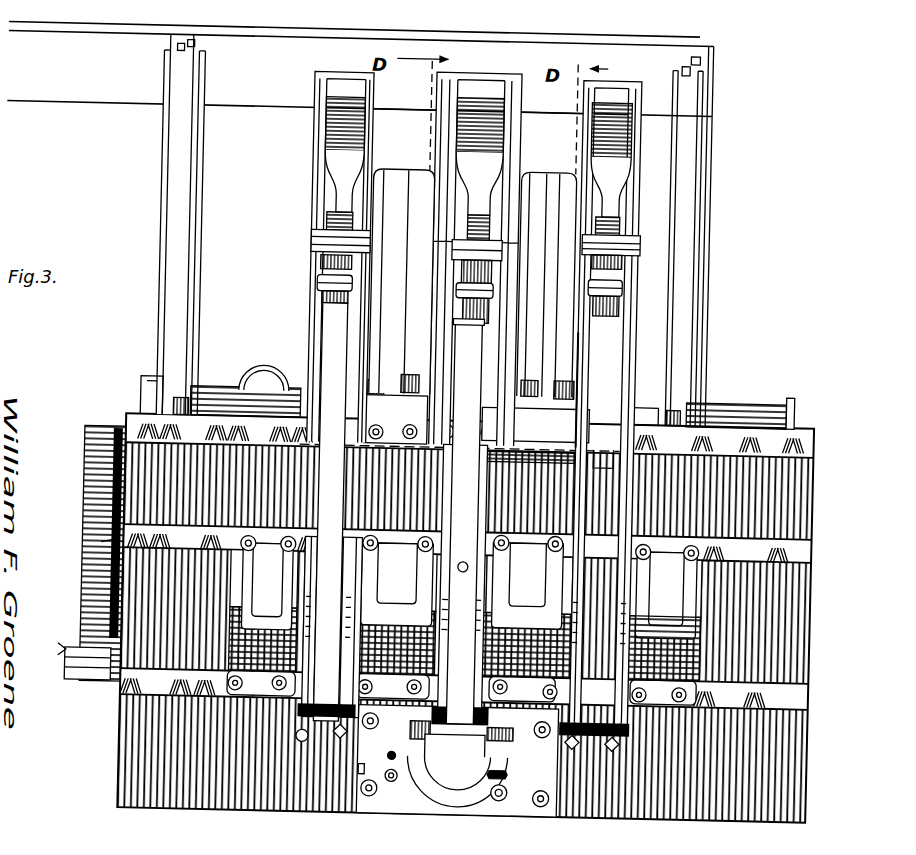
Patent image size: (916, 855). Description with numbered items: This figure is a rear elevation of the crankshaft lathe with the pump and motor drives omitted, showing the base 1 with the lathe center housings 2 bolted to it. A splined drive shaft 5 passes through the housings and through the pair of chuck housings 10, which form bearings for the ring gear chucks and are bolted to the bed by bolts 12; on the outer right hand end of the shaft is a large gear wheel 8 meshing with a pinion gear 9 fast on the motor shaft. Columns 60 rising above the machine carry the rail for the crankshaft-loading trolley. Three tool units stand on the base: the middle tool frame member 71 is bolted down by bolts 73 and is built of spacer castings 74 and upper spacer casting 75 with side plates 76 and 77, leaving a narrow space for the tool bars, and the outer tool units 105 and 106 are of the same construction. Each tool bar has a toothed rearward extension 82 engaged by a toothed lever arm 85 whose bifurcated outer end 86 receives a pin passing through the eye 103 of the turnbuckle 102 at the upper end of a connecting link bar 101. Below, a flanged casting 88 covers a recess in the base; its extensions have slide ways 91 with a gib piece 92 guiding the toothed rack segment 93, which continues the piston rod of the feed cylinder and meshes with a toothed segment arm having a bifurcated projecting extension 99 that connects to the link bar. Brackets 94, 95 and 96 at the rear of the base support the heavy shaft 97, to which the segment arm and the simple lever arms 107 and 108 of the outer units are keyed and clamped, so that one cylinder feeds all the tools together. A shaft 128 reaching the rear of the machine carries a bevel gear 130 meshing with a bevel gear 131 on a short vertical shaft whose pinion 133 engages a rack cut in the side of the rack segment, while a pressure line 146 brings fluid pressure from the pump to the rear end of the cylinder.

The base 1 is at (810, 636).
The lathe center housings 2 is at (209, 401).
The drive shaft 5 is at (104, 550).
The large gear wheel 8 is at (84, 466).
The pinion gear 9 is at (72, 662).
The chuck housings 10 is at (391, 185).
The bolts 12 is at (413, 378).
The columns 60 is at (156, 192).
The tool frame member 71 is at (489, 321).
The bolts 73 is at (543, 438).
The spacer casting 74 is at (495, 340).
The upper spacer casting 75 is at (483, 92).
The side plate 76 is at (306, 152).
The side plate 77 is at (430, 149).
The toothed rearward extension 82 is at (334, 103).
The toothed lever arm 85 is at (327, 172).
The bifurcated outer end 86 is at (312, 245).
The flanged casting 88 is at (572, 786).
The slide ways 91 is at (431, 756).
The gib piece 92 is at (392, 691).
The toothed rack segment 93 is at (454, 746).
The bracket 94 is at (554, 648).
The bracket 95 is at (398, 602).
The brackets 96 is at (464, 620).
The heavy shaft 97 is at (708, 641).
The bifurcated projecting extension 99 is at (486, 705).
The connecting link bar 101 is at (471, 425).
The turnbuckle 102 is at (314, 276).
The eye 103 is at (319, 228).
The outer tool unit 105 is at (630, 338).
The outer tool unit 106 is at (312, 302).
The lever arm 107 is at (633, 714).
The lever arm 108 is at (300, 708).
The shaft 128 is at (504, 790).
The bevel gear 130 is at (519, 790).
The bevel gear 131 is at (511, 776).
The pinion 133 is at (457, 773).
The pressure line 146 is at (372, 777).